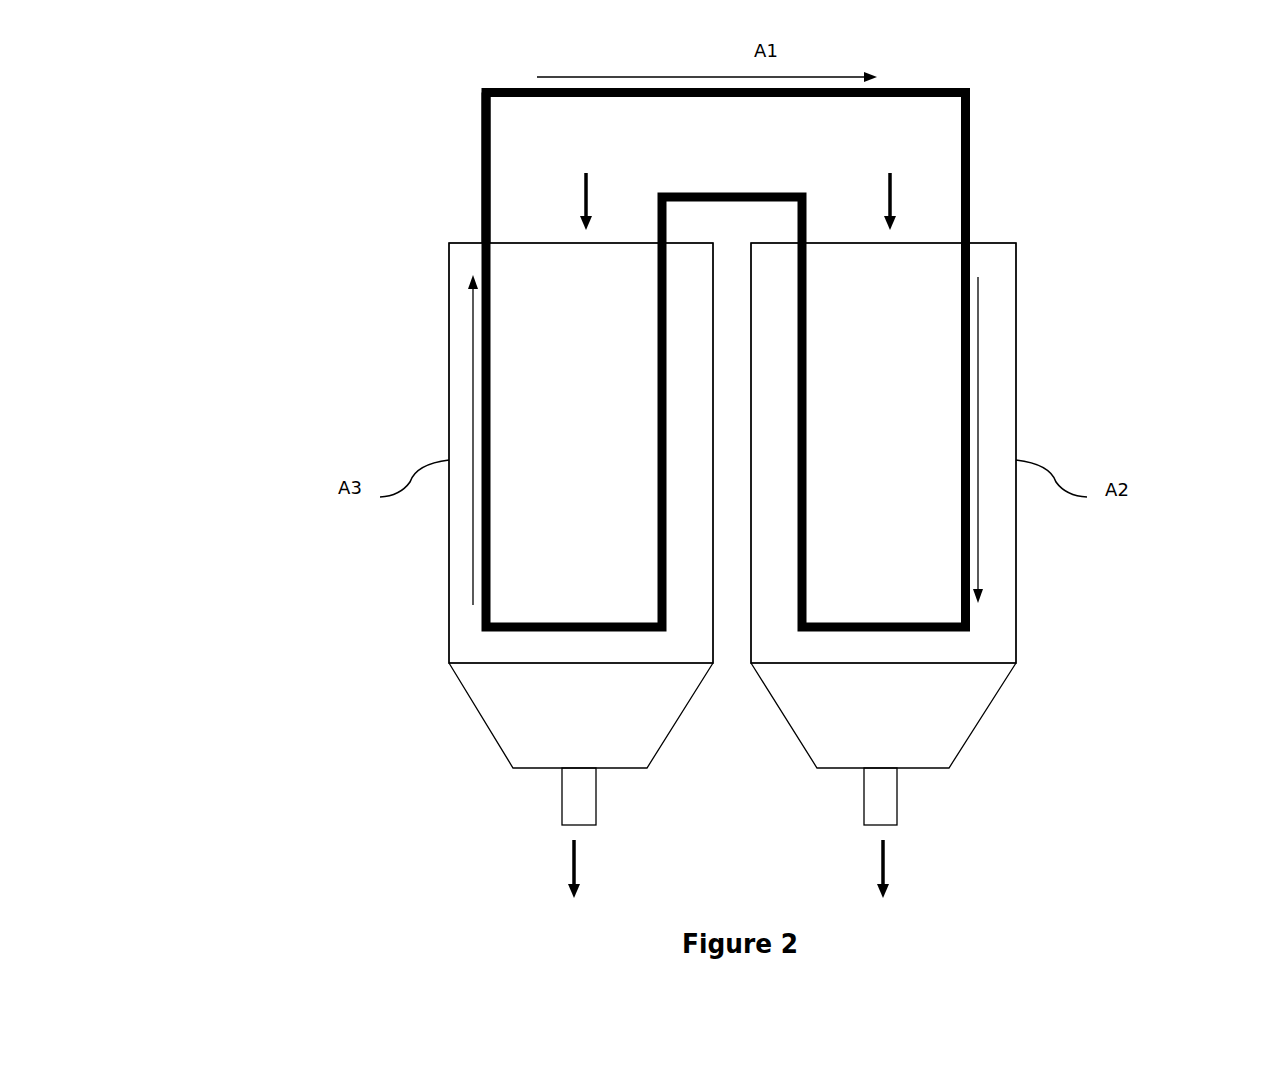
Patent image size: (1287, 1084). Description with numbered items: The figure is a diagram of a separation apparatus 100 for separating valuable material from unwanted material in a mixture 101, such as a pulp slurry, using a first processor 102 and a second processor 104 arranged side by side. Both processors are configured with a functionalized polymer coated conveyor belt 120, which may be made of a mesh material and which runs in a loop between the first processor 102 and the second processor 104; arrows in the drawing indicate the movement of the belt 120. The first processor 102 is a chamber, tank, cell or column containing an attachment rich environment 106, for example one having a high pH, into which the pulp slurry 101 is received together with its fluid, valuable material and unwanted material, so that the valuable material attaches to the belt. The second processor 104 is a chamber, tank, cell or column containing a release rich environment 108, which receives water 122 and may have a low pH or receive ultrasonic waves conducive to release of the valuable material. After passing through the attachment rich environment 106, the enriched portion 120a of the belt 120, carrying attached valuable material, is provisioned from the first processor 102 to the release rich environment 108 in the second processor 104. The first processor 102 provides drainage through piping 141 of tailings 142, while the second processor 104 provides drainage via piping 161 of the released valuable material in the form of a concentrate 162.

The apparatus 100 is at (1097, 140).
The mixture 101 is at (582, 169).
The first processor 102 is at (449, 350).
The second processor 104 is at (939, 505).
The attachment rich environment 106 is at (554, 450).
The release rich environment 108 is at (863, 440).
The functionalized polymer coated conveyor belt 120 is at (464, 169).
The enriched portion of the belt 120a is at (481, 122).
The water 122 is at (888, 170).
The piping 141 is at (562, 803).
The tailings 142 is at (531, 877).
The piping 161 is at (897, 807).
The concentrate 162 is at (954, 877).